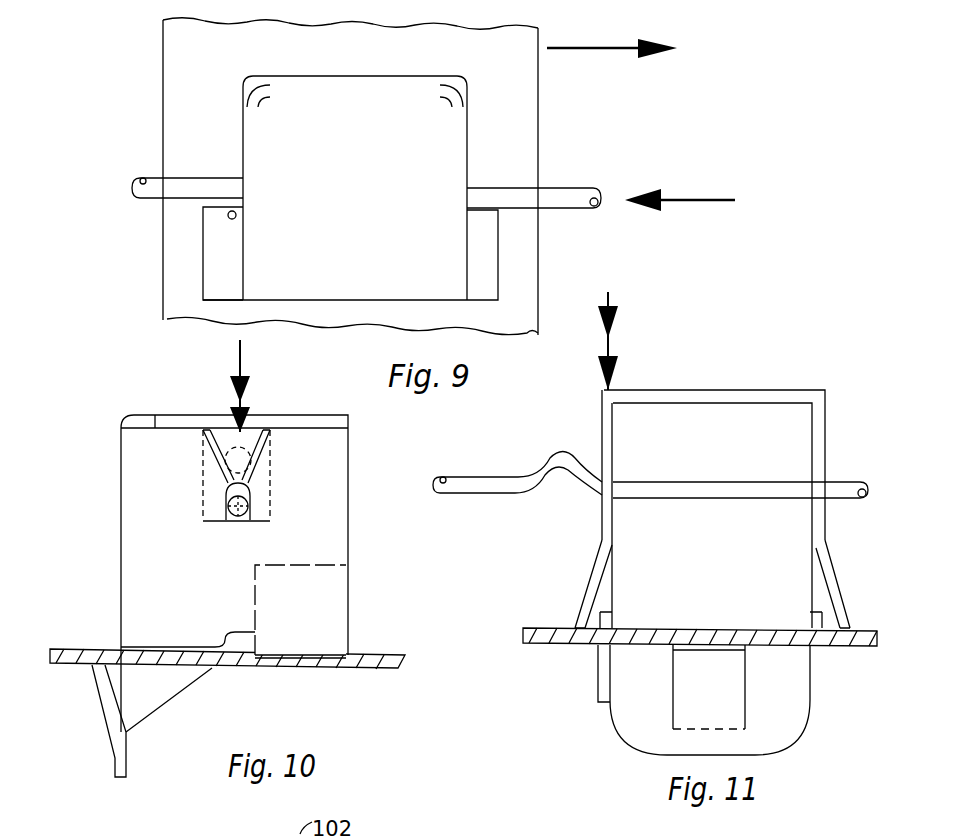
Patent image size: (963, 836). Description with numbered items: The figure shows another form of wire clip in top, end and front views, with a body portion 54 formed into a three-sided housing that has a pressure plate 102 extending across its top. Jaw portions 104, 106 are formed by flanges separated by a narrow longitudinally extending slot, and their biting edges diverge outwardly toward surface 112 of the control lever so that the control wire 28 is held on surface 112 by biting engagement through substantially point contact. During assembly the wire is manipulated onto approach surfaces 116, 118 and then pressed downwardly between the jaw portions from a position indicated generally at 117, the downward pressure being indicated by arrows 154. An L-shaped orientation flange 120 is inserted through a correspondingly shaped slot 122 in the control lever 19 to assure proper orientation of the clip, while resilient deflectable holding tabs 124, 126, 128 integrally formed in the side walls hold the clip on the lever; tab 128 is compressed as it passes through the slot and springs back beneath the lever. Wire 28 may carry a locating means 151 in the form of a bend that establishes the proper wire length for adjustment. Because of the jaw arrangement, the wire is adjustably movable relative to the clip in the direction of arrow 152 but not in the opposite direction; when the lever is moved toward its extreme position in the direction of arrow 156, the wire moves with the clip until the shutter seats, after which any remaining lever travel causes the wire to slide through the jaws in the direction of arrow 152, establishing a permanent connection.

In FIG. 9, the mounting plate / panel 19 is at (160, 100).
In FIG. 10, the mounting plate / panel 19 is at (76, 666).
In FIG. 11, the mounting plate / panel 19 is at (562, 650).
In FIG. 9, the wire 28 is at (563, 180).
In FIG. 10, the wire 28 is at (235, 522).
In FIG. 11, the wire 28 is at (489, 474).
In FIG. 9, the body portion 54 is at (470, 150).
In FIG. 10, the body portion 54 is at (349, 490).
In FIG. 11, the body portion 54 is at (598, 515).
In FIG. 9, the pressure plate 102 is at (303, 72).
In FIG. 10, the pressure plate 102 is at (184, 413).
In FIG. 11, the pressure plate 102 is at (727, 386).
In FIG. 9, the jaw portion 104 is at (238, 165).
In FIG. 10, the jaw portion 104 is at (204, 498).
In FIG. 9, the jaw portion 106 is at (236, 219).
In FIG. 10, the jaw portion 106 is at (258, 494).
In FIG. 10, the surface of the lever 112 is at (256, 521).
In FIG. 10, the approach surface 116 is at (205, 453).
In FIG. 10, the position 117 is at (245, 450).
In FIG. 10, the approach surface 118 is at (258, 452).
In FIG. 10, the L-shaped orientation flange 120 is at (150, 700).
In FIG. 11, the L-shaped orientation flange 120 is at (594, 677).
In FIG. 11, the slot 122 is at (818, 652).
In FIG. 9, the holding tab 124 is at (200, 257).
In FIG. 10, the holding tab 124 is at (328, 633).
In FIG. 11, the holding tab 124 is at (574, 595).
In FIG. 9, the holding tab 126 is at (500, 263).
In FIG. 11, the holding tab 126 is at (842, 600).
In FIG. 10, the holding tab 128 is at (98, 718).
In FIG. 11, the holding tab 128 is at (684, 700).
In FIG. 11, the locating means 151 is at (563, 450).
In FIG. 9, the arrow 152 is at (704, 196).
In FIG. 10, the arrows 154 is at (246, 362).
In FIG. 11, the arrows 154 is at (614, 346).
In FIG. 9, the arrow 156 is at (628, 50).